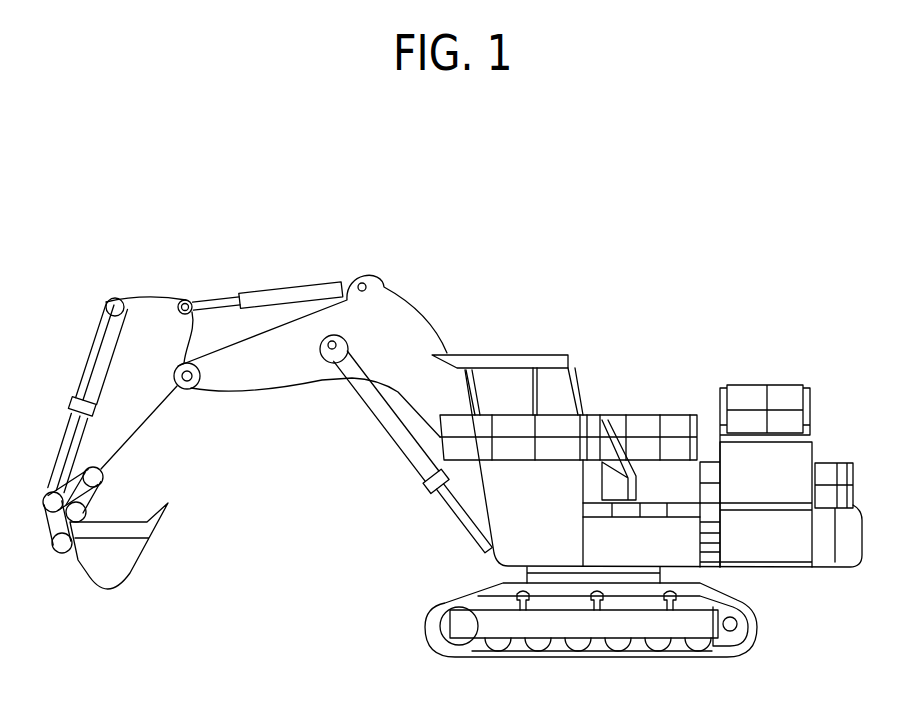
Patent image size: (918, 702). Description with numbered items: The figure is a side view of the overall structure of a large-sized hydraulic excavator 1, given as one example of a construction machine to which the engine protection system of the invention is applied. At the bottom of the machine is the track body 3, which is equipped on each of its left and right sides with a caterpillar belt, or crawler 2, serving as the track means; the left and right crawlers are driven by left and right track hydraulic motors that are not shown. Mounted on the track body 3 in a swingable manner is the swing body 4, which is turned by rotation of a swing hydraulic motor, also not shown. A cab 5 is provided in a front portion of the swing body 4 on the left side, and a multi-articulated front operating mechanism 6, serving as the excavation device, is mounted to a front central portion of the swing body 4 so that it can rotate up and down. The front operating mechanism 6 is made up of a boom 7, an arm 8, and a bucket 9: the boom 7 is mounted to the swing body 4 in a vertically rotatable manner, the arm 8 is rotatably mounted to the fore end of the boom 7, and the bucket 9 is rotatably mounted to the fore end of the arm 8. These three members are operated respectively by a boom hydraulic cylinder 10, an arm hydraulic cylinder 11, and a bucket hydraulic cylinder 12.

The large-sized hydraulic excavator 1 is at (447, 436).
The caterpillar belt (crawler) 2 is at (752, 633).
The track body 3 is at (631, 620).
The swing body 4 is at (778, 467).
The cab 5 is at (527, 354).
The front operating mechanism 6 is at (326, 343).
The boom 7 is at (277, 366).
The arm 8 is at (143, 383).
The bucket 9 is at (125, 562).
The boom hydraulic cylinder 10 is at (402, 437).
The arm hydraulic cylinder 11 is at (278, 288).
The bucket hydraulic cylinder 12 is at (92, 352).